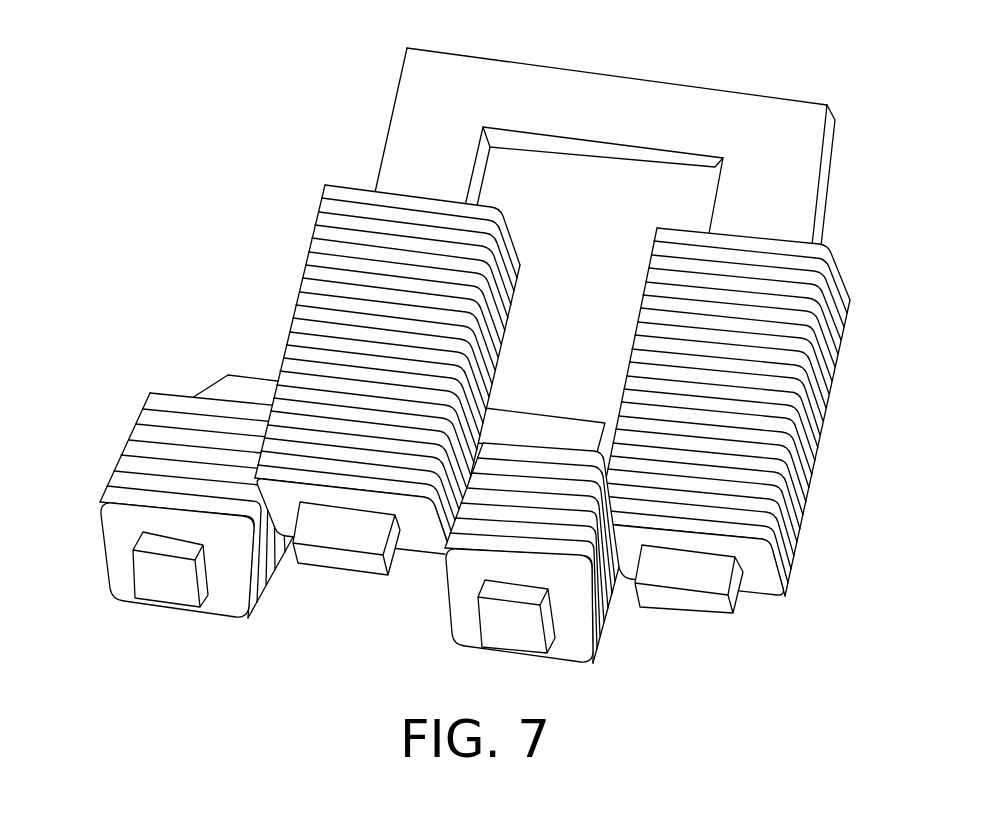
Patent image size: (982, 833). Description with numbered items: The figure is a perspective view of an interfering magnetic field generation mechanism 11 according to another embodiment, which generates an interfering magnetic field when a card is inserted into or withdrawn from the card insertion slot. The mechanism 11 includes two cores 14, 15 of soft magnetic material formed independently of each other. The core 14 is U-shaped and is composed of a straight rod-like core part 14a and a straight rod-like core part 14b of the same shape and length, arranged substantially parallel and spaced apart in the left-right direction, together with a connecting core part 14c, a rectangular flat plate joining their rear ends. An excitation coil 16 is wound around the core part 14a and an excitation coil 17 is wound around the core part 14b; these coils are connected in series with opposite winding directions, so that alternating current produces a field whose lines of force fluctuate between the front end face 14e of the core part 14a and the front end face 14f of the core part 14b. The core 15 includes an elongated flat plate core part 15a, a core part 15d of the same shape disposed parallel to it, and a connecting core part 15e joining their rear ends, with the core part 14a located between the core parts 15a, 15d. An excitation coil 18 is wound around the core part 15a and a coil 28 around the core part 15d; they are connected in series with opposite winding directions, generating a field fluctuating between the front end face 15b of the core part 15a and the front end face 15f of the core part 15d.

The interfering magnetic field generation mechanism 11 is at (257, 68).
The core 14 is at (248, 375).
The core part 14a is at (482, 628).
The core part 14b is at (133, 573).
The connecting core part 14c is at (238, 386).
The front end face 14e is at (510, 639).
The front end face 14f is at (167, 594).
The core 15 is at (678, 84).
The core part 15a is at (378, 166).
The front end face 15b is at (337, 562).
The core part 15d is at (829, 208).
The connecting core part 15e is at (617, 107).
The front end face 15f is at (682, 605).
The excitation coil 16 is at (543, 440).
The excitation coil 17 is at (123, 442).
The excitation coil 18 is at (305, 262).
The coil 28 is at (830, 421).